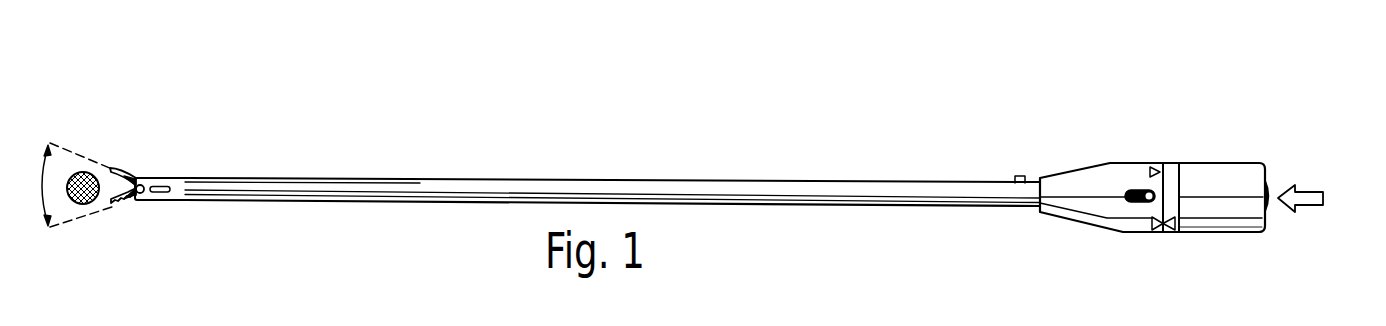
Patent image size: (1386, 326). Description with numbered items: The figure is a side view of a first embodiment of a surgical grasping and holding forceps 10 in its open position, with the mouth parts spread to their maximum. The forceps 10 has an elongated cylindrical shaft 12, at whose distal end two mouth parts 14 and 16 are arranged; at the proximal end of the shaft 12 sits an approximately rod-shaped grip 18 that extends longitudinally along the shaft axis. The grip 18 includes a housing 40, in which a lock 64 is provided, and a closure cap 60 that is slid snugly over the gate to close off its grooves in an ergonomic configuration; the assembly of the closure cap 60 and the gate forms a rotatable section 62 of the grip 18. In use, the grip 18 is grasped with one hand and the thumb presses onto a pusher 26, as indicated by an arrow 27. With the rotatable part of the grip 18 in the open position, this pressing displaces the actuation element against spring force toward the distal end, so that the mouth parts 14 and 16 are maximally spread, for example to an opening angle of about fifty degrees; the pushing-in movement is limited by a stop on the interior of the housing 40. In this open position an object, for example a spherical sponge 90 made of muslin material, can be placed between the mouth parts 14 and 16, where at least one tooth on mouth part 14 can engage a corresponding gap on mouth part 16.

The surgical grasping and holding forceps 10 is at (752, 148).
The shaft 12 is at (478, 185).
The mouth part 14 is at (125, 168).
The mouth part 16 is at (127, 200).
The grip 18 is at (1137, 168).
The pusher 26 is at (1268, 190).
The arrow 27 is at (1313, 190).
The housing 40 is at (1082, 183).
The closure cap 60 is at (1220, 222).
The rotatable section 62 is at (1217, 177).
The lock 64 is at (1122, 207).
The spherical sponge 90 is at (80, 171).